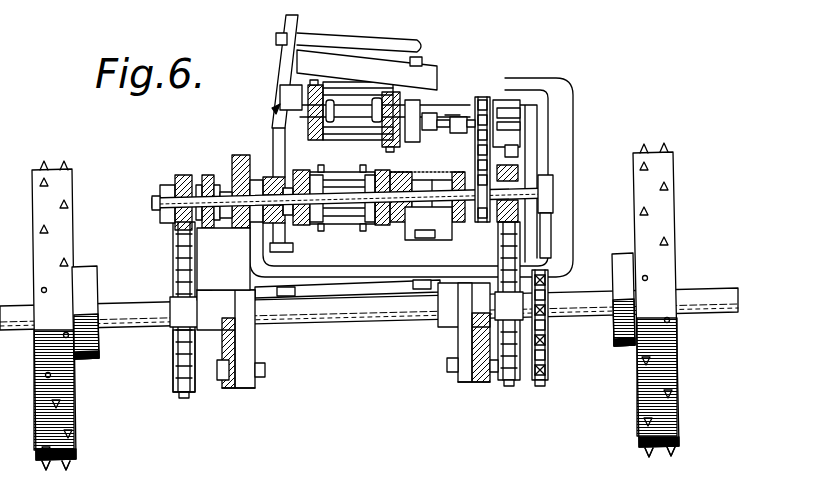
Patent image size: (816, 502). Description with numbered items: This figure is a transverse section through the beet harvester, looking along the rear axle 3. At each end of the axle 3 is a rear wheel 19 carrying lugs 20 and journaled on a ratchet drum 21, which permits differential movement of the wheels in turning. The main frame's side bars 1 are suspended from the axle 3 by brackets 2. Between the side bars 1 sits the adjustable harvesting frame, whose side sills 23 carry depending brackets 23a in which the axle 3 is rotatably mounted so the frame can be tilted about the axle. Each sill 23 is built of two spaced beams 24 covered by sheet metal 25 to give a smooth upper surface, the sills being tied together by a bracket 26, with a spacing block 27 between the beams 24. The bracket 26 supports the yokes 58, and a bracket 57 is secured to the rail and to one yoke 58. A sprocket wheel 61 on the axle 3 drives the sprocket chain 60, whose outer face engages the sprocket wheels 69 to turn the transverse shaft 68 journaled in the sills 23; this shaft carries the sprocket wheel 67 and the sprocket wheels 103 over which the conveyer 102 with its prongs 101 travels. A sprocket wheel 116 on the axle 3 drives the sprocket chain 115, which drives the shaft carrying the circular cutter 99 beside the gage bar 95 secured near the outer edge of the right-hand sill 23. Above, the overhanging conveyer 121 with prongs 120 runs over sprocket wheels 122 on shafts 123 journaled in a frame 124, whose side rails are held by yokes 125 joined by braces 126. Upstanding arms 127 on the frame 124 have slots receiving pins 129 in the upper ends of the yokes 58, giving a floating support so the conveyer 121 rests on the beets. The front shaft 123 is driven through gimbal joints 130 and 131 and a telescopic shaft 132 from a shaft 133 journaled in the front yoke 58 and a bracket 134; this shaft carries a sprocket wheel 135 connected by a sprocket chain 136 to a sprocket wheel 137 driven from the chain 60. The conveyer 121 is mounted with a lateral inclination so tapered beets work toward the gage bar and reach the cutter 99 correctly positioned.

The side bars 1 is at (228, 368).
The brackets 2 is at (254, 340).
The rear axle 3 is at (131, 328).
The rear wheels 19 is at (75, 436).
The lugs 20 is at (42, 466).
The ratchet drums 21 is at (88, 360).
The side sills 23 is at (240, 168).
The depending bracket 23a is at (276, 302).
The beams 24 is at (240, 220).
The sheet metal 25 is at (256, 180).
The bracket 26 is at (392, 222).
The spacing block 27 is at (428, 223).
The bracket 57 is at (160, 215).
The yokes 58 is at (553, 250).
The sprocket chain 60 is at (178, 356).
The sprocket wheel 61 is at (176, 263).
The sprocket wheel 67 is at (208, 175).
The transverse shaft 68 is at (152, 203).
The sprocket wheels 69 is at (180, 174).
The gage bar 95 is at (232, 165).
The circular cutter 99 is at (275, 134).
The prongs 101 is at (316, 176).
The conveyer 102 is at (345, 225).
The sprocket wheels 103 is at (305, 165).
The sprocket chain 115 is at (548, 360).
The sprocket wheel 116 is at (540, 386).
The prongs 120 is at (372, 140).
The overhanging conveyer 121 is at (356, 88).
The sprocket wheels 122 is at (300, 87).
The shafts 123 is at (272, 108).
The frame 124 is at (405, 60).
The yokes 125 is at (430, 118).
The braces 126 is at (332, 50).
The upstanding arms 127 is at (286, 22).
The bolts or pins 129 is at (276, 40).
The gimbal joint 130 is at (440, 120).
The gimbal joint 131 is at (458, 128).
The telescopic shaft 132 is at (452, 122).
The shaft 133 is at (512, 126).
The bracket 134 is at (508, 103).
The sprocket wheel 135 is at (486, 104).
The sprocket chain 136 is at (490, 160).
The sprocket wheel 137 is at (474, 220).